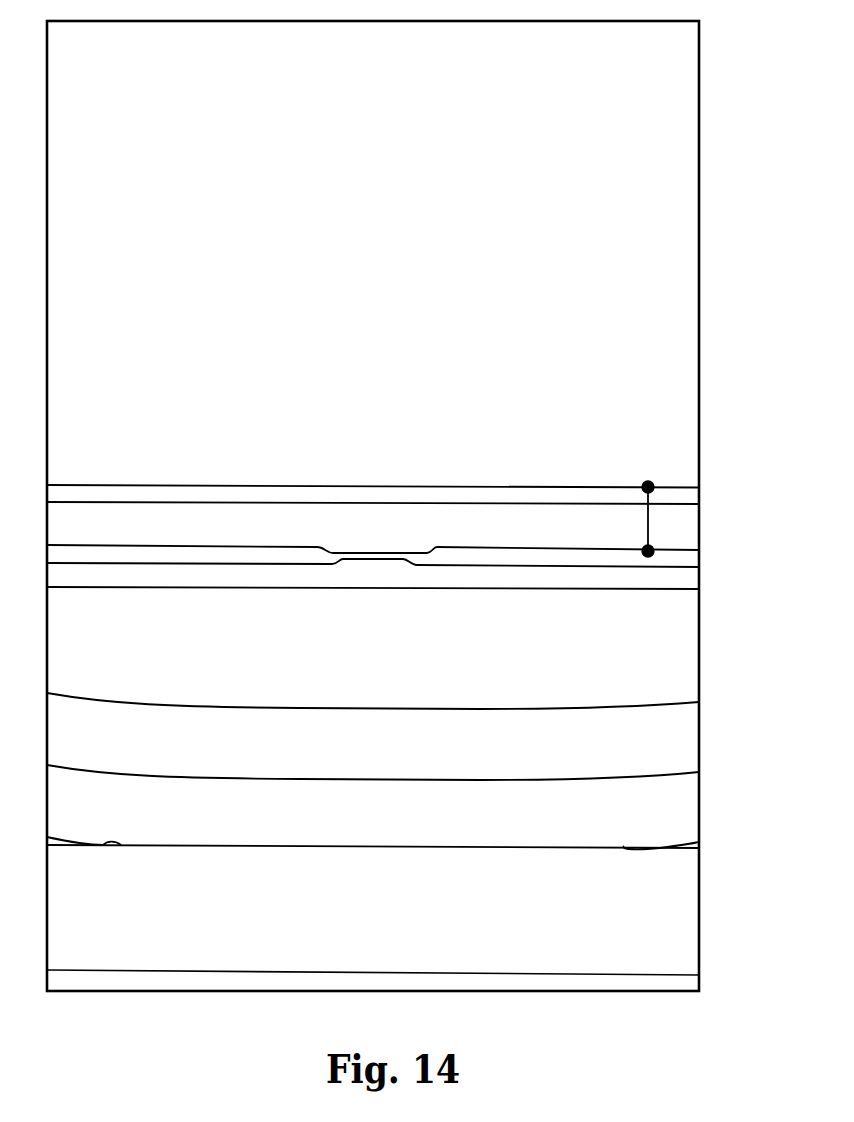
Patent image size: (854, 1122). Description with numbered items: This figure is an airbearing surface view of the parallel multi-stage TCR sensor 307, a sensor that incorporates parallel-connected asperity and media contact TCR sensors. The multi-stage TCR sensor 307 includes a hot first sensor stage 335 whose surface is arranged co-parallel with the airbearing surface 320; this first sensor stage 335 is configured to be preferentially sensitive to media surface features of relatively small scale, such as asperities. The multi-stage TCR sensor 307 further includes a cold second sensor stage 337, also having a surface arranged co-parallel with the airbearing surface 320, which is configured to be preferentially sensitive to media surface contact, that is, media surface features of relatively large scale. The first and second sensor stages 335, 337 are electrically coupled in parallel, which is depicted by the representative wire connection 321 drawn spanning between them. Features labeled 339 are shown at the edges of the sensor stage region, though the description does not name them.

The multi-stage TCR sensor 307 is at (606, 462).
The airbearing surface 320 is at (628, 519).
The representative wire connection 321 is at (648, 525).
The hot first sensor stage 335 is at (373, 557).
The cold second sensor stage 337 is at (447, 486).
The shoulder 339 is at (208, 547).